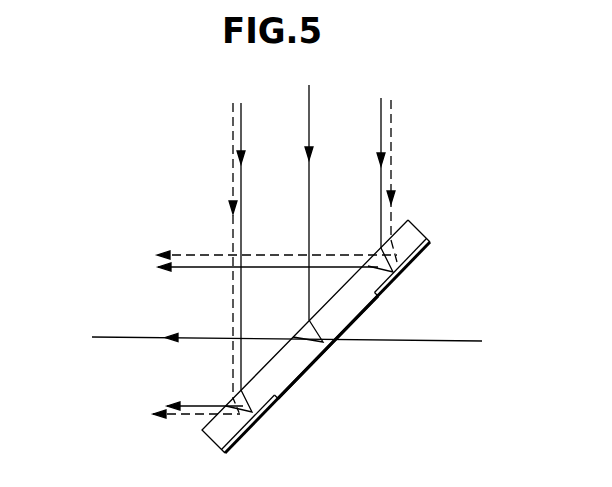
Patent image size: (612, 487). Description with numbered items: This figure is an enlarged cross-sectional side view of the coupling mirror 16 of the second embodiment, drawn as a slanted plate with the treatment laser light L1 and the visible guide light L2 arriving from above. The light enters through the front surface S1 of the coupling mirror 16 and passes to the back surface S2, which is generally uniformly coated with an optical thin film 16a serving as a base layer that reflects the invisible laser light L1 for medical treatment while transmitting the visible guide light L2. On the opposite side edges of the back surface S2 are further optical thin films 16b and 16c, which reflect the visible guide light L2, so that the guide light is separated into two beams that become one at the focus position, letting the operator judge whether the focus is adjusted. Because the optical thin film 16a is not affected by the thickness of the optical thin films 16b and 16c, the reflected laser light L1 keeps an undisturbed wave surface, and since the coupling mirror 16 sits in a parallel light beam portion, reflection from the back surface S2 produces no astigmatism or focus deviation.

The coupling mirror 16 is at (414, 223).
The optical thin film 16a is at (375, 298).
The optical thin film 16b is at (431, 246).
The optical thin film 16c is at (268, 413).
The laser light for medical treatment L1 is at (310, 117).
The visible guide light L2 is at (391, 118).
The front surface S1 is at (257, 373).
The back surface S2 is at (321, 343).